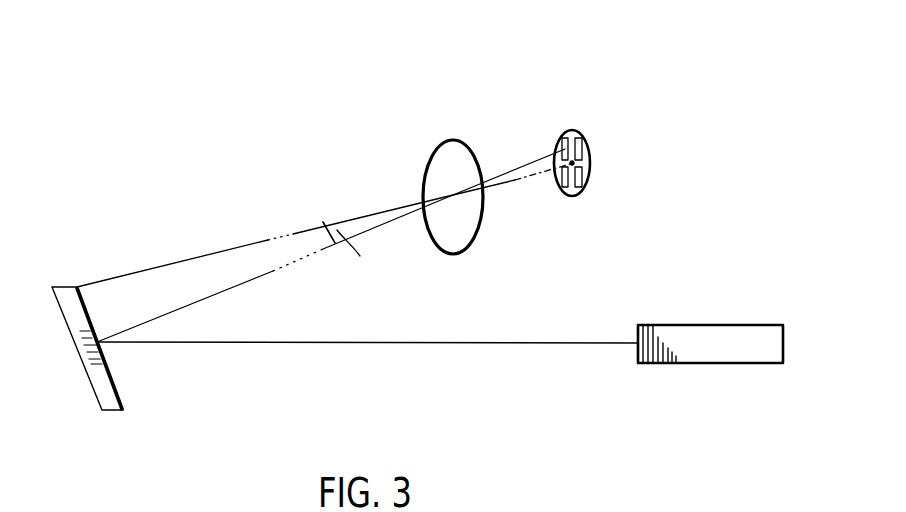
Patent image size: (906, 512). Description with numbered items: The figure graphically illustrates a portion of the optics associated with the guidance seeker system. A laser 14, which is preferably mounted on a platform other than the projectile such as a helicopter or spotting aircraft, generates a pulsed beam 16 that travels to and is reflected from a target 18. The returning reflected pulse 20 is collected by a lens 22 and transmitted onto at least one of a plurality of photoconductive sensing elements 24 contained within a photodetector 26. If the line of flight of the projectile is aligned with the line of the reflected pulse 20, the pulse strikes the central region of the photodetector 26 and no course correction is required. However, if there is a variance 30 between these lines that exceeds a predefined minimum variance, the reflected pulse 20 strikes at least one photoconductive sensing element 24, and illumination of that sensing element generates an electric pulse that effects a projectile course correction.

The laser 14 is at (683, 363).
The pulsed beam 16 is at (420, 346).
The target 18 is at (93, 378).
The reflected pulse 20 is at (273, 271).
The lens 22 is at (453, 146).
The photoconductive sensing elements 24 is at (583, 145).
The photodetector 26 is at (577, 115).
The variance 30 is at (323, 222).